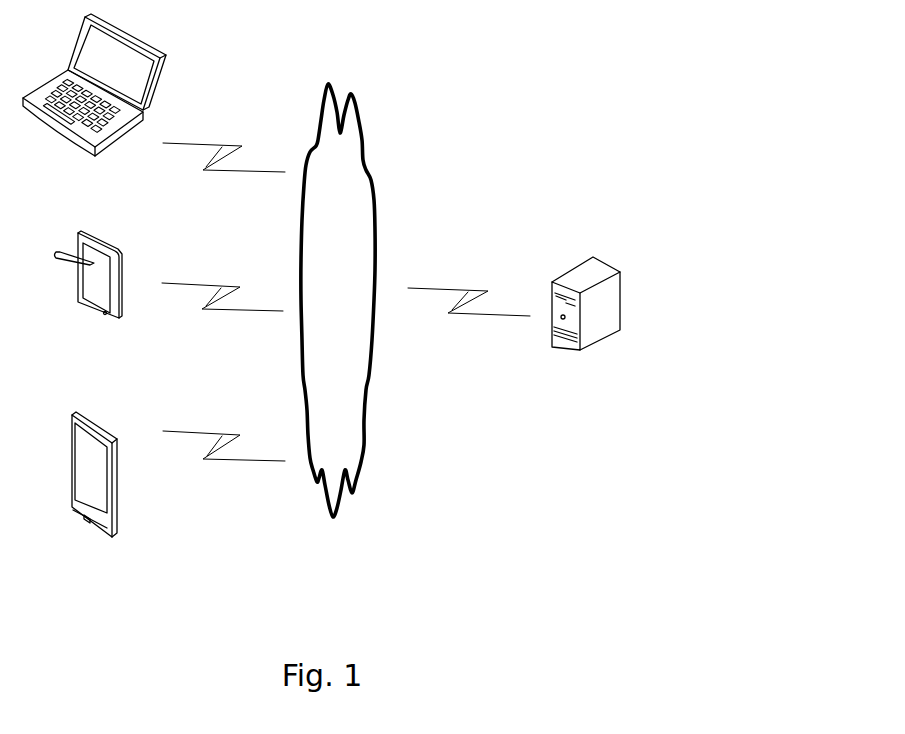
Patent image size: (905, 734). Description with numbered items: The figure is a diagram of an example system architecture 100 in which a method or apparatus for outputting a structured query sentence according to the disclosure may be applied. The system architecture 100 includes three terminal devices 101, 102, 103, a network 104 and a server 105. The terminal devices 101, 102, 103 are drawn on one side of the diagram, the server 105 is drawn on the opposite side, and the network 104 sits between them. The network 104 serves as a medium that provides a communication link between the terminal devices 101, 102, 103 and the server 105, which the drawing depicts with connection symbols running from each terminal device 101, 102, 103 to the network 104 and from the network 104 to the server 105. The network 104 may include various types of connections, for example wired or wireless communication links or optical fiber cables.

The system architecture 100 is at (571, 67).
The terminal device 101 is at (94, 494).
The terminal device 102 is at (89, 295).
The terminal device 103 is at (94, 102).
The network 104 is at (338, 300).
The server 105 is at (586, 325).